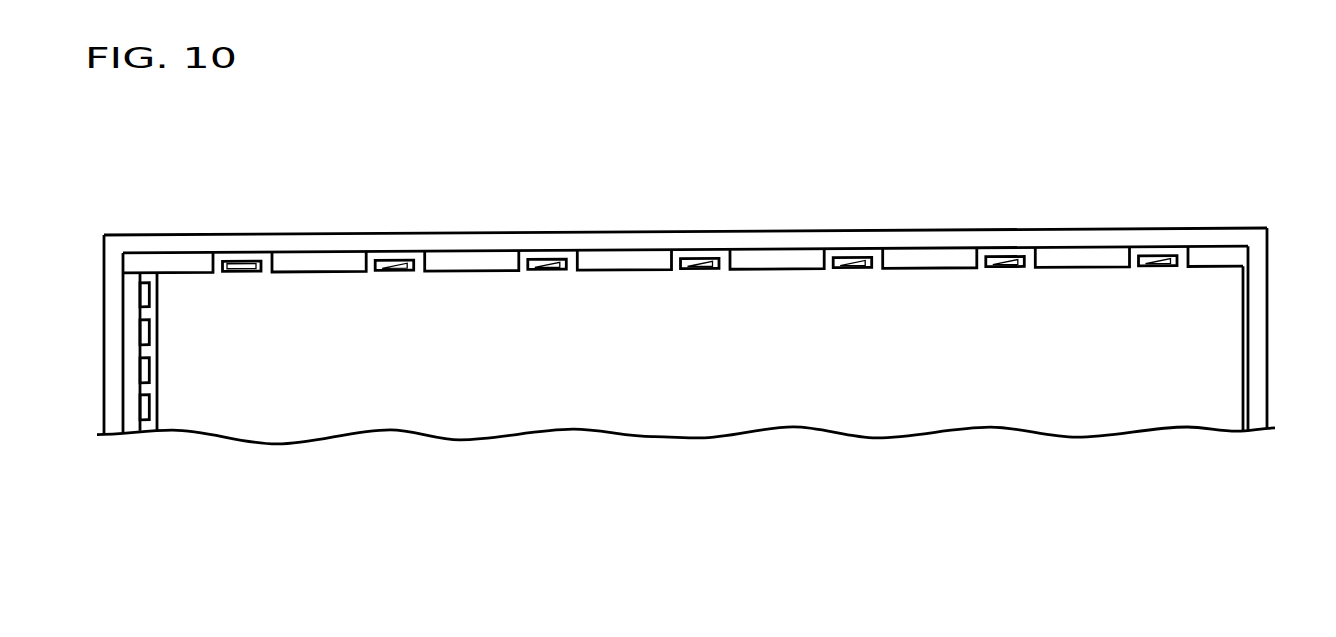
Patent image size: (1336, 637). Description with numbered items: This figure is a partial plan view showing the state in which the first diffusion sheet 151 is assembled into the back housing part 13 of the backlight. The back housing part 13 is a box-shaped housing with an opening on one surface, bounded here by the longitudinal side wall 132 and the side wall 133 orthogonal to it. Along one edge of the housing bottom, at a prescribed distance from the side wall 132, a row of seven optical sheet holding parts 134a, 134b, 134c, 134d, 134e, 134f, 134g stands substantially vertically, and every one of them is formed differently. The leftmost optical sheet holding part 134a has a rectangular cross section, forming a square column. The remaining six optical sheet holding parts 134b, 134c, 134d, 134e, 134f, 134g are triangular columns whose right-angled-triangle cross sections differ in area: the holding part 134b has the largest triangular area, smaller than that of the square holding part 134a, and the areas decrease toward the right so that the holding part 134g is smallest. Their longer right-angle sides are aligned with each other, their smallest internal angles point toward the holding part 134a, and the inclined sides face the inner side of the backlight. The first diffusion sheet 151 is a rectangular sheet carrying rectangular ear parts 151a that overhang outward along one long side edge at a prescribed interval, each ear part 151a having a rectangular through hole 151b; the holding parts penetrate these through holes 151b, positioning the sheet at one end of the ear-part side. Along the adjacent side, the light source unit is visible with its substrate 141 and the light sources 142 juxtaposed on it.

The back housing part 13 is at (716, 292).
The side wall 132 is at (1227, 236).
The side wall 133 is at (1265, 344).
The optical sheet holding part 134a is at (245, 265).
The optical sheet holding part 134b is at (398, 265).
The optical sheet holding part 134c is at (550, 265).
The optical sheet holding part 134d is at (703, 265).
The optical sheet holding part 134e is at (856, 265).
The optical sheet holding part 134f is at (1008, 265).
The optical sheet holding part 134g is at (1161, 265).
The substrate 141 is at (132, 424).
The light source 142 is at (148, 407).
The first diffusion sheet 151 is at (645, 415).
The ear part 151a is at (225, 257).
The through hole 151b is at (233, 273).